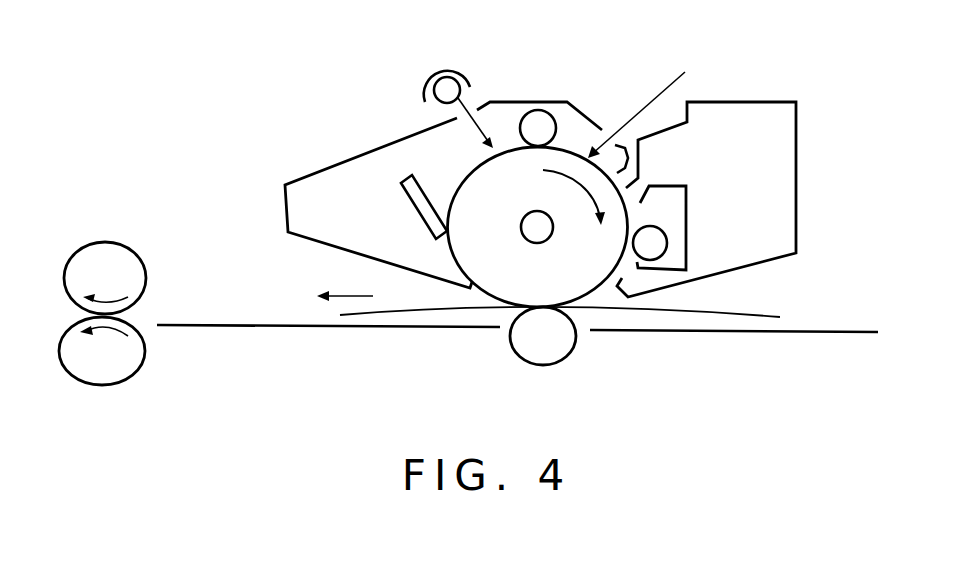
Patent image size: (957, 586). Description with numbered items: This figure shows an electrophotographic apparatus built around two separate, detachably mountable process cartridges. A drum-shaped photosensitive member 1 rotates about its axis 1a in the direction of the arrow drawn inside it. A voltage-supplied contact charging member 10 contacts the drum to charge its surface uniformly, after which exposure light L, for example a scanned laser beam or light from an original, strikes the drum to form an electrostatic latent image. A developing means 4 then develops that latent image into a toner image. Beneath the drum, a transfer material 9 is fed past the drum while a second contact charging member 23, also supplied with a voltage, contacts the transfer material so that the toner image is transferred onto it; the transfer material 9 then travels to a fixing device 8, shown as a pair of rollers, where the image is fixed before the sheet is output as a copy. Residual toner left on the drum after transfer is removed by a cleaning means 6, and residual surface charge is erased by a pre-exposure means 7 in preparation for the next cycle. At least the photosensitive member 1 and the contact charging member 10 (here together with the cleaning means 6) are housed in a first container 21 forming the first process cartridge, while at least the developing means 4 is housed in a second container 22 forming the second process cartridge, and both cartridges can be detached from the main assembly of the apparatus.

The photosensitive member 1 is at (465, 175).
The axis 1a is at (543, 242).
The developing means 4 is at (687, 212).
The cleaning means 6 is at (408, 197).
The pre-exposure means 7 is at (437, 73).
The fixing device 8 is at (108, 242).
The transfer material 9 is at (747, 315).
The contact charging member 10 is at (537, 108).
The first container 21 is at (285, 210).
The second container 22 is at (797, 157).
The contact charging member 23 is at (543, 367).
The exposure light L is at (657, 95).